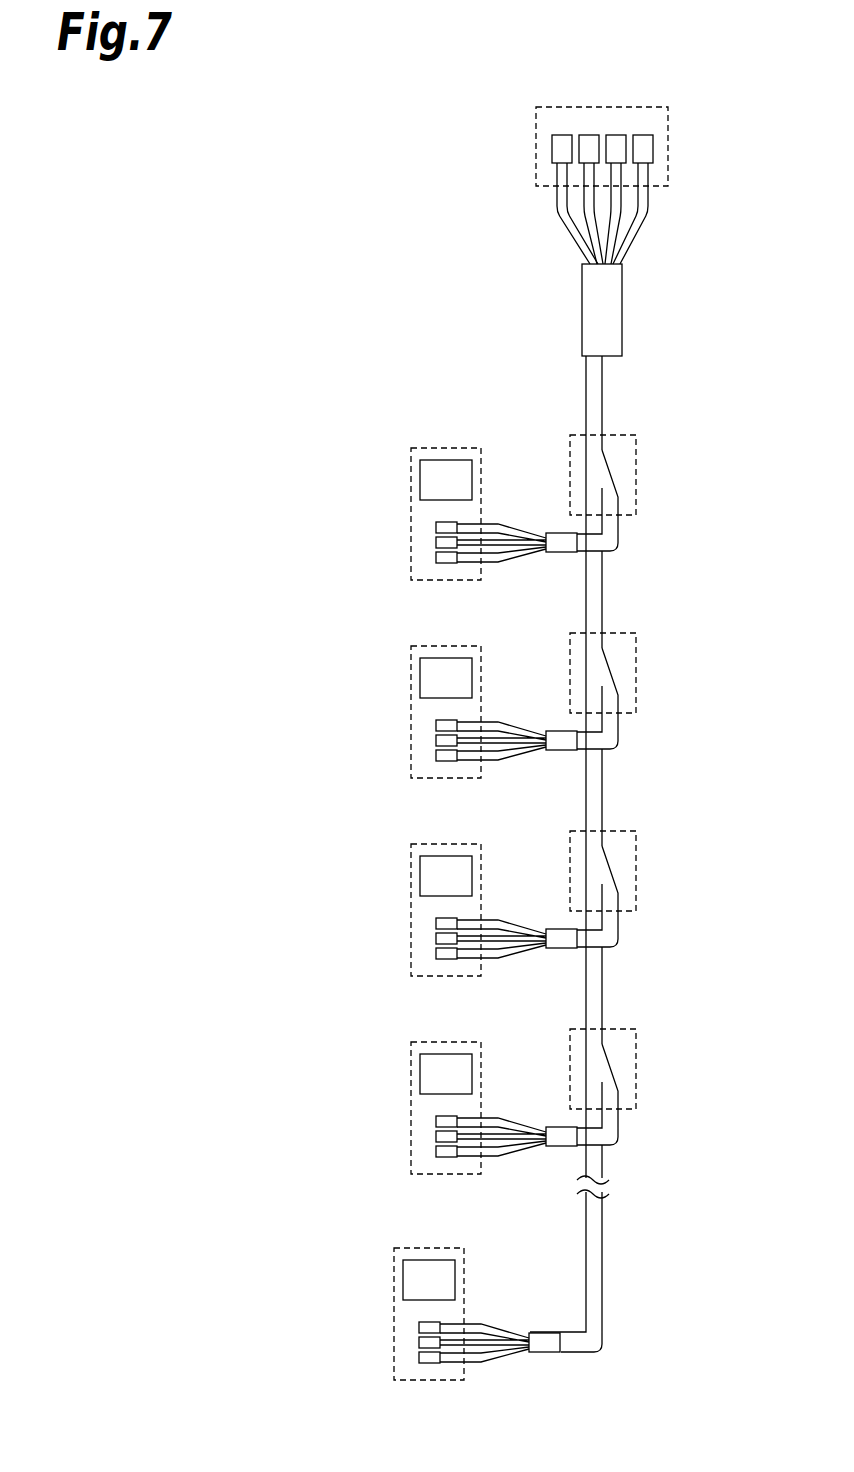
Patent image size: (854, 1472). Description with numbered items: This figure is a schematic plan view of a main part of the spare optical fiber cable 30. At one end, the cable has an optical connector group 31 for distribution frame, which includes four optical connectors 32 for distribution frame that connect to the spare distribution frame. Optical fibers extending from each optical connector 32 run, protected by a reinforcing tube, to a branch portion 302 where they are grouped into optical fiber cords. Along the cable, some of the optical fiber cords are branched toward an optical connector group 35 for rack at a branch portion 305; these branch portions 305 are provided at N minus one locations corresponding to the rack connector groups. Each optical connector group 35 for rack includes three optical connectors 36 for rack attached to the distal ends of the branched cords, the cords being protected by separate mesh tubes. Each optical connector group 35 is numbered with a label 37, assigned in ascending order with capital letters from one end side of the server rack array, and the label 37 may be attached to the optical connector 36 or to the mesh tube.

The spare optical fiber cable 30 is at (340, 163).
The optical connector group for distribution frame 31 is at (668, 148).
The optical connector for distribution frame 32 is at (562, 135).
The branch portion 302 is at (622, 308).
The branch portion 305 is at (636, 475).
The optical connector group for rack 35 is at (470, 448).
The optical connector for rack 36 is at (436, 557).
The label 37 is at (437, 460).